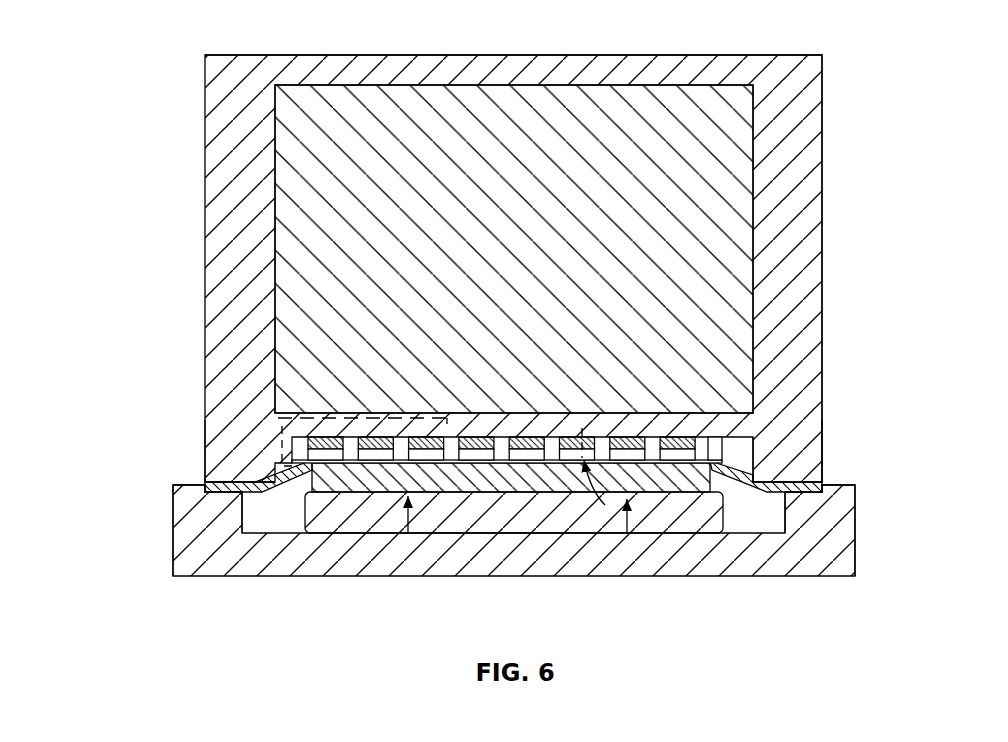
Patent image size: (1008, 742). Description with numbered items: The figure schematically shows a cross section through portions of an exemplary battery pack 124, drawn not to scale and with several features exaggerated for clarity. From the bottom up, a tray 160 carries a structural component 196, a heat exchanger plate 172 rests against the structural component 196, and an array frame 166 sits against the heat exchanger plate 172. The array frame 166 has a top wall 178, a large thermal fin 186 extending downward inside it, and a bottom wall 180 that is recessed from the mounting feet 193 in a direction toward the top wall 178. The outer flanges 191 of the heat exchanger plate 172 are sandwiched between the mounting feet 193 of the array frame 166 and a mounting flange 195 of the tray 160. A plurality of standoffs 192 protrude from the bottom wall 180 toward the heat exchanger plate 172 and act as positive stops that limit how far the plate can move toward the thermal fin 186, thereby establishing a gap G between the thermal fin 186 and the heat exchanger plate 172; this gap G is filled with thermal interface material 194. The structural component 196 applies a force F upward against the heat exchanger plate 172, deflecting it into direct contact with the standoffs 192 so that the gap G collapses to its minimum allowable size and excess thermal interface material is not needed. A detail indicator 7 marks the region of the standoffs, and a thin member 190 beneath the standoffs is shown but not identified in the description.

The battery pack 124 is at (193, 49).
The top wall 178 is at (265, 78).
The array frame 166 is at (805, 72).
The thermal fin 186 is at (682, 95).
The mounting feet 193 is at (215, 440).
The outer flanges 191 is at (228, 497).
The heat exchanger plate 172 is at (456, 479).
The plate 190 is at (718, 444).
The standoffs 192 is at (565, 437).
The thermal interface material 194 is at (322, 460).
The structural component 196 is at (574, 515).
The tray 160 is at (681, 545).
The mounting flange 195 is at (186, 532).
The bottom wall 180 is at (300, 430).
The section indicator FIG. 7 is at (343, 415).
The force F is at (408, 533).
The gap G is at (602, 498).